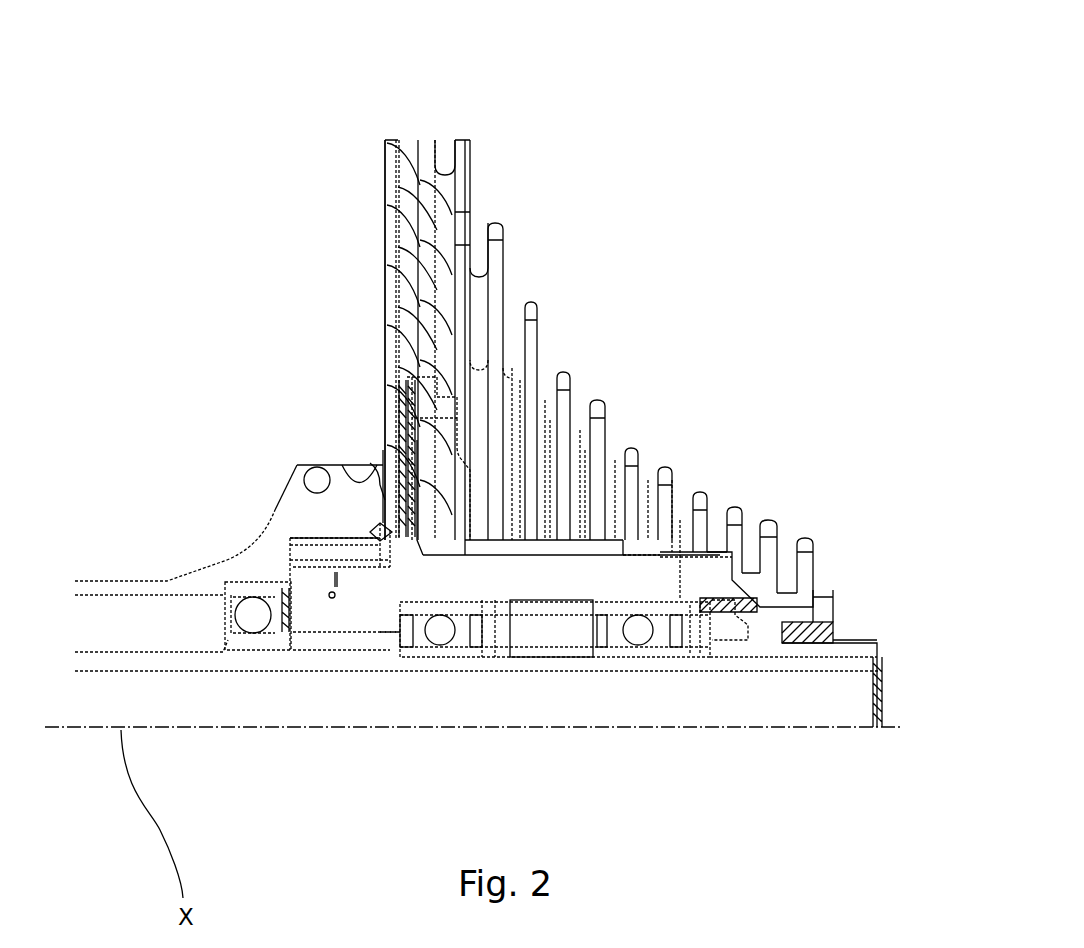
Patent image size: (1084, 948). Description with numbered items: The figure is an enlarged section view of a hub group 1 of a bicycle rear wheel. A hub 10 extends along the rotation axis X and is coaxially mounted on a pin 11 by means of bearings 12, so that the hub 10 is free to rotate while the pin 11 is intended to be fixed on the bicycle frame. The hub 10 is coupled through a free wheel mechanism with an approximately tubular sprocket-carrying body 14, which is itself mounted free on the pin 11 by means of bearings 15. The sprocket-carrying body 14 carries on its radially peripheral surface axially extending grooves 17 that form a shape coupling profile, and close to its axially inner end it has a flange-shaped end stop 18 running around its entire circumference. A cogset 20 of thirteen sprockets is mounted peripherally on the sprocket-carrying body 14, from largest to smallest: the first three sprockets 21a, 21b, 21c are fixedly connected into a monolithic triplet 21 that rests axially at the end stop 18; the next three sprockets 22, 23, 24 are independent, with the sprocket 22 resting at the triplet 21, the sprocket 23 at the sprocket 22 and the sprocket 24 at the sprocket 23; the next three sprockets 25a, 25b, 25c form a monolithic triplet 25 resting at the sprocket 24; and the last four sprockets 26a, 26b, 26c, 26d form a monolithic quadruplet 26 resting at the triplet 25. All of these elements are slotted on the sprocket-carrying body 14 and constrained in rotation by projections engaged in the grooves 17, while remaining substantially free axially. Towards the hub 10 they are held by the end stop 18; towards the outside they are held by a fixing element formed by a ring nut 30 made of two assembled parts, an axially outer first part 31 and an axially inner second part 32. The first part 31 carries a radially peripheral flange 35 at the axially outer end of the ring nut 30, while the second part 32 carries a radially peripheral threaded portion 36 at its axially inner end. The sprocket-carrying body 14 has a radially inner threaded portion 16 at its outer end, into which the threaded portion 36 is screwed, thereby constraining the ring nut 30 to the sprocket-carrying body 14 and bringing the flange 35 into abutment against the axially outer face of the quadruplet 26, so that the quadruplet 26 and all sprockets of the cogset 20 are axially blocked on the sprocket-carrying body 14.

The hub group 1 is at (230, 268).
The hub 10 is at (190, 572).
The pin 11 is at (142, 650).
The bearings 12 is at (253, 613).
The sprocket-carrying body 14 is at (458, 587).
The bearings 15 is at (638, 633).
The threaded portion 16 is at (700, 520).
The grooves 17 is at (552, 548).
The end stop 18 is at (408, 547).
The cogset 20 is at (684, 247).
The monolithic set (triplet) 21 is at (360, 277).
The sprocket 21a is at (385, 155).
The sprocket 21b is at (428, 205).
The sprocket 21c is at (458, 252).
The sprocket 22 is at (498, 235).
The sprocket 23 is at (537, 307).
The sprocket 24 is at (563, 373).
The monolithic set (triplet) 25 is at (504, 432).
The sprocket 25a is at (592, 417).
The sprocket 25b is at (628, 460).
The sprocket 25c is at (673, 503).
The monolithic set (quadruplet) 26 is at (828, 512).
The sprocket 26a is at (707, 500).
The sprocket 26b is at (735, 508).
The sprocket 26c is at (770, 520).
The sprocket 26d is at (808, 552).
The ring nut 30 is at (840, 613).
The first part 31 is at (808, 615).
The second part 32 is at (743, 603).
The flange 35 is at (827, 605).
The threaded portion 36 is at (718, 605).